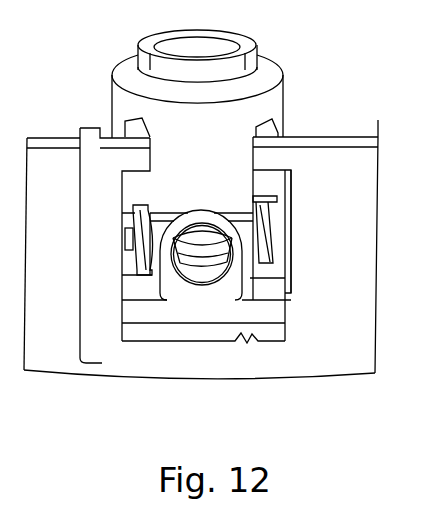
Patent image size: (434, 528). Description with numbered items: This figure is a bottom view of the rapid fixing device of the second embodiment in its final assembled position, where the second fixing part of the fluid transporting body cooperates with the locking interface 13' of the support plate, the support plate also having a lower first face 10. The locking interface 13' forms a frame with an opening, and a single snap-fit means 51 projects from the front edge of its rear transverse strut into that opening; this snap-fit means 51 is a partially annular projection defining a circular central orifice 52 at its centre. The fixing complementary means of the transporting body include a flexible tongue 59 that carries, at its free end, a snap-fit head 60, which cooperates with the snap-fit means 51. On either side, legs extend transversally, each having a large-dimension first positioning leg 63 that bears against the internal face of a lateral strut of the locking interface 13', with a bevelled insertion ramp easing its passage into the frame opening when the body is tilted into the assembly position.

The lower first face 10 is at (316, 212).
The locking interface 13' is at (201, 249).
The snap-fit means 51 is at (185, 280).
The central orifice 52 is at (288, 286).
The flexible tongue 59 is at (213, 273).
The snap-fit head 60 is at (201, 215).
The first positioning leg 63 is at (123, 266).